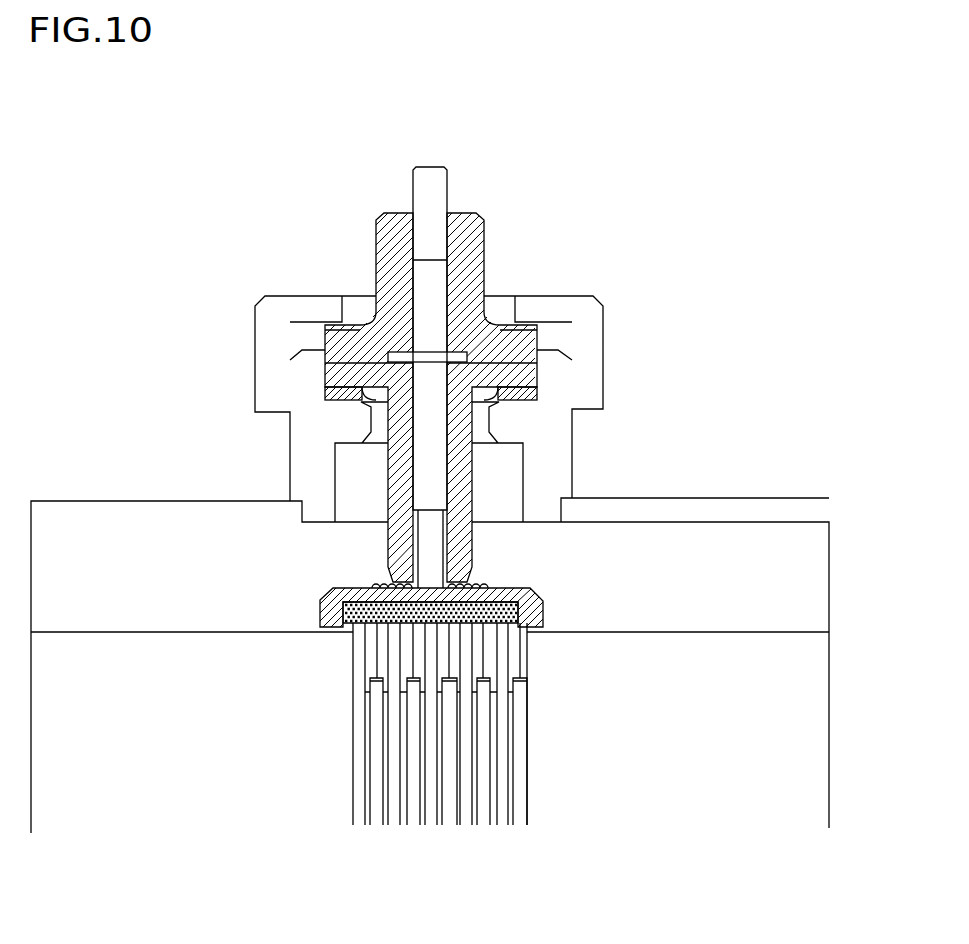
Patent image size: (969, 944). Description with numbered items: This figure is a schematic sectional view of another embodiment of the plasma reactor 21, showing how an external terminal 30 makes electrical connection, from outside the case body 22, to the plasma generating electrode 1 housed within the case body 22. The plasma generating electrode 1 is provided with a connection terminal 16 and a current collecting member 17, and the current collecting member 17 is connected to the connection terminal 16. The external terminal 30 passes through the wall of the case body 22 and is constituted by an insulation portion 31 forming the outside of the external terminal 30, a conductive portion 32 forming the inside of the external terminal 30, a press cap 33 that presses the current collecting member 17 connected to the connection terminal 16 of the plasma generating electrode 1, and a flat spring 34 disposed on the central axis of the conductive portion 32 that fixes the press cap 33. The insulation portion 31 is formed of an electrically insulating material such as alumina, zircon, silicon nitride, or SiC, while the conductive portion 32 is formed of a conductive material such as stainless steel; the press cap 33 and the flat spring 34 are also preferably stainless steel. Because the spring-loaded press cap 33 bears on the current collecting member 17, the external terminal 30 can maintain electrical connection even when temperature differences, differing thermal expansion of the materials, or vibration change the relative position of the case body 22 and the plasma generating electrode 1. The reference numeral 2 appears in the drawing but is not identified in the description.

The plasma generating electrode 1 is at (525, 744).
The base plate 2 is at (782, 478).
The connection terminal 16 is at (527, 635).
The current collecting member 17 is at (540, 597).
The plasma reactor 21 is at (338, 108).
The case body 22 is at (720, 568).
The external terminal 30 is at (550, 267).
The insulation portion 31 is at (313, 465).
The conductive portion 32 is at (483, 247).
The press cap 33 is at (320, 598).
The flat spring 34 is at (483, 583).